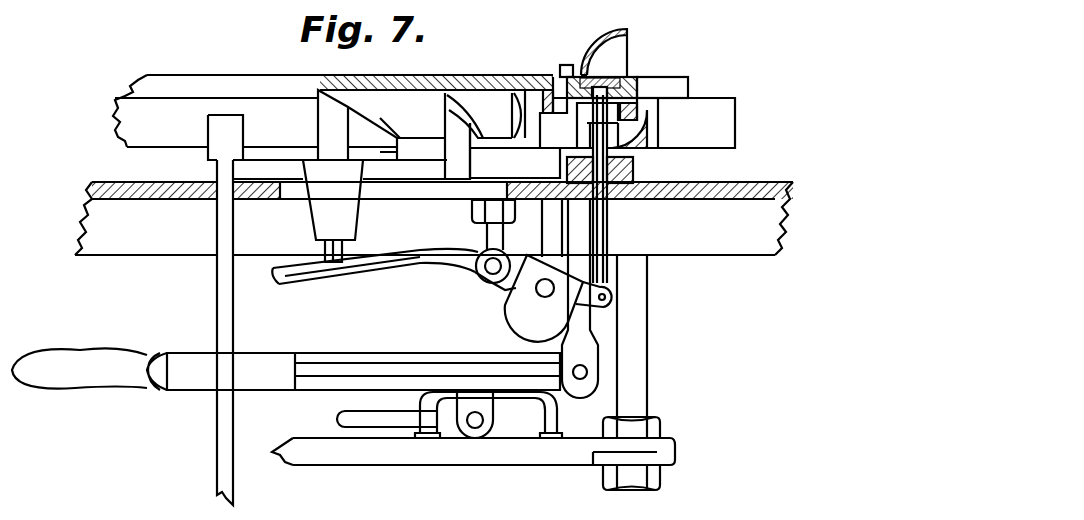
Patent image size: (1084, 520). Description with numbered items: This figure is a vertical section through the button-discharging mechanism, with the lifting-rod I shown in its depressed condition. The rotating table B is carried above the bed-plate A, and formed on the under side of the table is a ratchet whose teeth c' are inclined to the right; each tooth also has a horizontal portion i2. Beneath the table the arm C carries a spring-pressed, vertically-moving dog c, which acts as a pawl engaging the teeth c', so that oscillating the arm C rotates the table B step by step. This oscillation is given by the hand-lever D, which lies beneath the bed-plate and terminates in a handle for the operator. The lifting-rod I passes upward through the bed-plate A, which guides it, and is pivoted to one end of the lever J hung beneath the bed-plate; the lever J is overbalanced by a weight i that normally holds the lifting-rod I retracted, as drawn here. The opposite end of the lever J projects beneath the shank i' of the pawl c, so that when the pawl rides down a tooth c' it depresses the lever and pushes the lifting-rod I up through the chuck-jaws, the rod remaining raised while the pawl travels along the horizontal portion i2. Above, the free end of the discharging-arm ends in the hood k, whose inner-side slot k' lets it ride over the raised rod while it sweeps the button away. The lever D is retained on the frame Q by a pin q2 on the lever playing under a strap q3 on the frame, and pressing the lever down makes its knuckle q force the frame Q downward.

The rotating table B is at (236, 75).
The arm C is at (273, 162).
The dog c is at (381, 125).
The ratchet teeth c' is at (472, 135).
The horizontal portion of the ratchet-tooth i2 is at (429, 141).
The hood k is at (604, 45).
The slot k' is at (619, 69).
The lifting-rod I is at (650, 246).
The bed-plate A is at (160, 240).
The hand-lever D is at (240, 383).
The shank of the pawl i' is at (322, 211).
The lever J is at (405, 275).
The weight i is at (558, 242).
The frame Q is at (450, 500).
The pin q2 is at (337, 419).
The strap q3 is at (428, 405).
The knuckle q is at (475, 413).